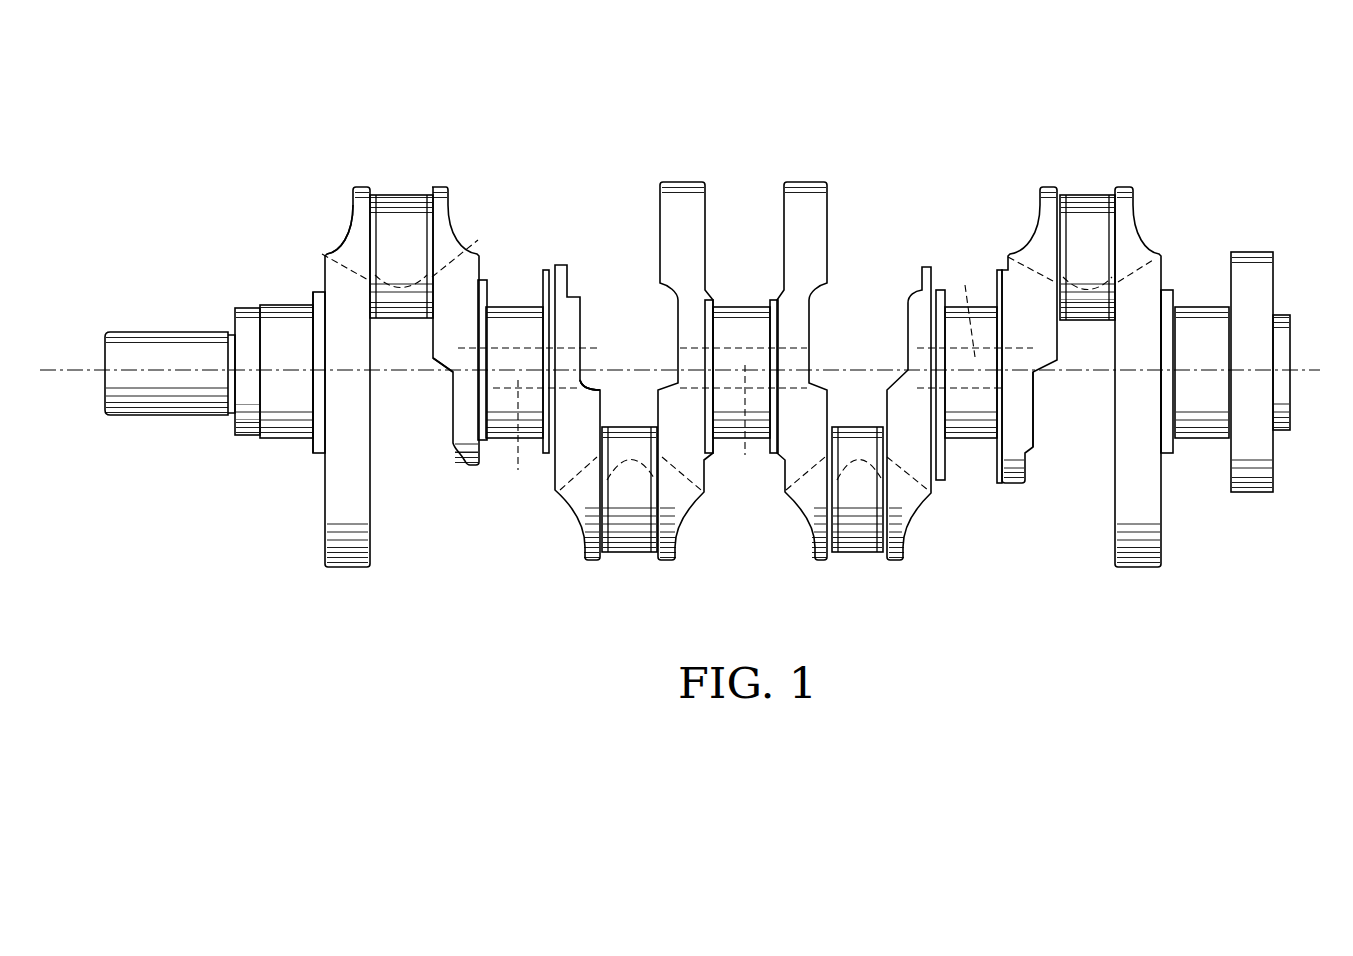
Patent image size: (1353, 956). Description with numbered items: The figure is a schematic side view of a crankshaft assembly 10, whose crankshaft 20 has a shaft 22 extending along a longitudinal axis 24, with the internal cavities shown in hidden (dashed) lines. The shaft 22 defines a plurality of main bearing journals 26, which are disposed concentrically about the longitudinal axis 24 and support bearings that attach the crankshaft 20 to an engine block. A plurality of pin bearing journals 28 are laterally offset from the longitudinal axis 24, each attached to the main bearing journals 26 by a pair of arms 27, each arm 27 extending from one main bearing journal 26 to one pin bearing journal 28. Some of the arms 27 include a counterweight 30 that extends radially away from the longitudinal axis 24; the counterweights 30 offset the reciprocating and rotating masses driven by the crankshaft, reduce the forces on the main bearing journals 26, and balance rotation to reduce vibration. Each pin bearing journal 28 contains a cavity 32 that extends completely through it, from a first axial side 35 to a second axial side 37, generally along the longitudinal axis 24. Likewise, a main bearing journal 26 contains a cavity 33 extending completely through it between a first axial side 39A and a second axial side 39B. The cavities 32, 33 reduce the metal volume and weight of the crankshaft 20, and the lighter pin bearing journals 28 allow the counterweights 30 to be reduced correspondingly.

The crankshaft assembly 10 is at (1198, 87).
The crankshaft 20 is at (248, 308).
The shaft 22 is at (178, 402).
The longitudinal axis 24 is at (93, 372).
The main bearing journals 26 is at (285, 445).
The arms 27 is at (323, 265).
The pin bearing journals 28 is at (412, 195).
The counterweight 30 is at (337, 567).
The cavity 32 is at (385, 195).
The cavity 33 is at (516, 470).
The first axial side 35 is at (348, 225).
The second axial side 37 is at (455, 205).
The first axial side 39A is at (458, 390).
The second axial side 39B is at (575, 336).